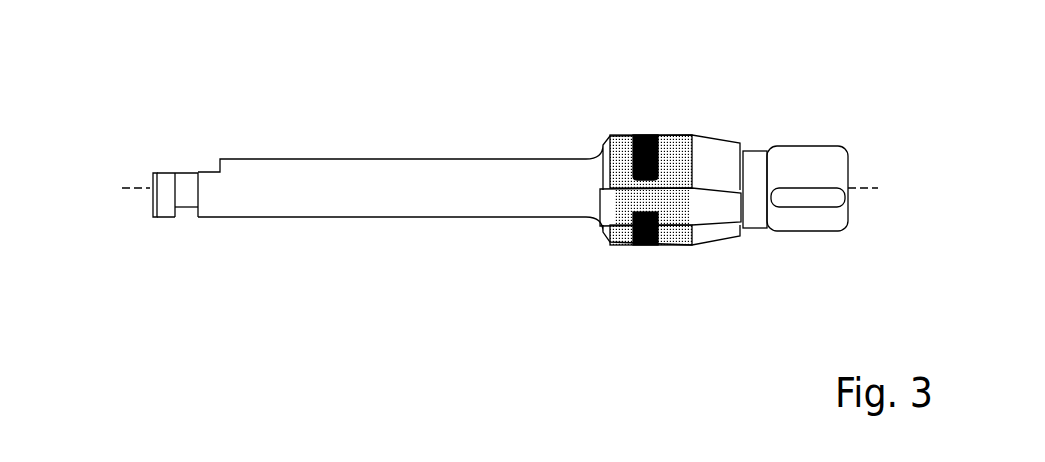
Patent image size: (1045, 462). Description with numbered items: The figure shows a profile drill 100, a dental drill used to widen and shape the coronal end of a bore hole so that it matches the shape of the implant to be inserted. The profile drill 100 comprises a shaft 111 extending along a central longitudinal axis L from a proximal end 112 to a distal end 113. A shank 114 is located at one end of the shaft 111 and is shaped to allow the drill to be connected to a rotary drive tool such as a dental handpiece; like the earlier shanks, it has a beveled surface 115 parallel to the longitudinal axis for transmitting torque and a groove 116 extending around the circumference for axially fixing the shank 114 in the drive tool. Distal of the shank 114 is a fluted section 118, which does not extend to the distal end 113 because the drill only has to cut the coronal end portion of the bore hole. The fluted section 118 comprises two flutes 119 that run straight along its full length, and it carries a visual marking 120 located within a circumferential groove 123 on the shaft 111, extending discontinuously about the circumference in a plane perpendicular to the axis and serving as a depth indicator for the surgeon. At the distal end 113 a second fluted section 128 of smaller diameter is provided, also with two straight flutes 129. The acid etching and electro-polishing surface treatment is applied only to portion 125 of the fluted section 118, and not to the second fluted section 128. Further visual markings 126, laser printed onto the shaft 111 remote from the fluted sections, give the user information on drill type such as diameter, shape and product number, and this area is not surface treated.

The profile drill 100 is at (304, 102).
The shaft 111 is at (372, 158).
The proximal end 112 is at (153, 198).
The distal end 113 is at (848, 170).
The shank 114 is at (220, 275).
The beveled surface 115 is at (163, 172).
The groove 116 is at (186, 209).
The fluted section 118 is at (733, 320).
The flutes 119 is at (714, 206).
The visual marking 120 is at (643, 150).
The circumferential groove 123 is at (640, 160).
The portion 125 is at (693, 258).
The visual markings 126 is at (426, 205).
The second fluted section 128 is at (847, 115).
The flutes 129 is at (818, 195).